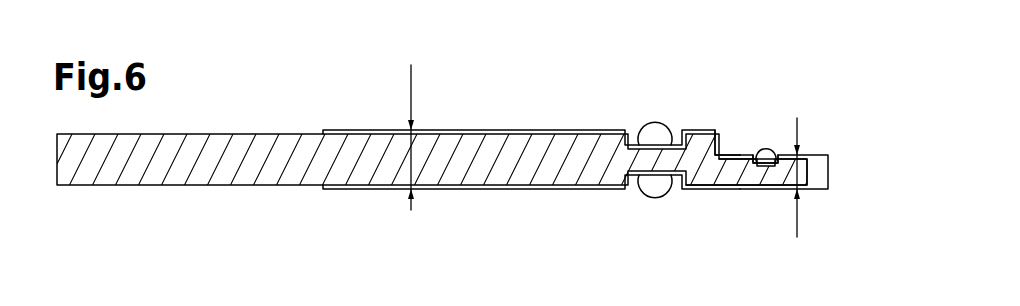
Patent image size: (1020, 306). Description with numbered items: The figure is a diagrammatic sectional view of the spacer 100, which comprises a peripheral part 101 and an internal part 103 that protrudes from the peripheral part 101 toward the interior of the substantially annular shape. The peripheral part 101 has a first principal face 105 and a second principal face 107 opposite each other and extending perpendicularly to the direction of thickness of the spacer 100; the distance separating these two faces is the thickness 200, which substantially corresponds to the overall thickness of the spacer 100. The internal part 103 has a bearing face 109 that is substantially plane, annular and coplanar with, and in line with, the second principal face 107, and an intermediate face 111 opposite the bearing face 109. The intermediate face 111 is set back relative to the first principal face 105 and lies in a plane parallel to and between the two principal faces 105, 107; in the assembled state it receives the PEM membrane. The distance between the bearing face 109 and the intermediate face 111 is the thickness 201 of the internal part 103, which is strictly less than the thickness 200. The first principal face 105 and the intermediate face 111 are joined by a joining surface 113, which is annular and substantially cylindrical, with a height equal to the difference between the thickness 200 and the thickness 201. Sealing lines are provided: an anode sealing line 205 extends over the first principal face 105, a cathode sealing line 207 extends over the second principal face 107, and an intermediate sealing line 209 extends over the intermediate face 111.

The spacer 100 is at (315, 64).
The peripheral part 101 is at (539, 186).
The internal part 103 is at (748, 148).
The first principal face 105 is at (478, 129).
The second principal face 107 is at (473, 191).
The bearing face 109 is at (733, 191).
The intermediate face 111 is at (736, 152).
The joining surface 113 is at (728, 150).
The thickness of the peripheral part 200 is at (412, 85).
The thickness of the internal part 201 is at (797, 218).
The anode sealing line 205 is at (650, 124).
The cathode sealing line 207 is at (655, 197).
The intermediate sealing line 209 is at (768, 148).